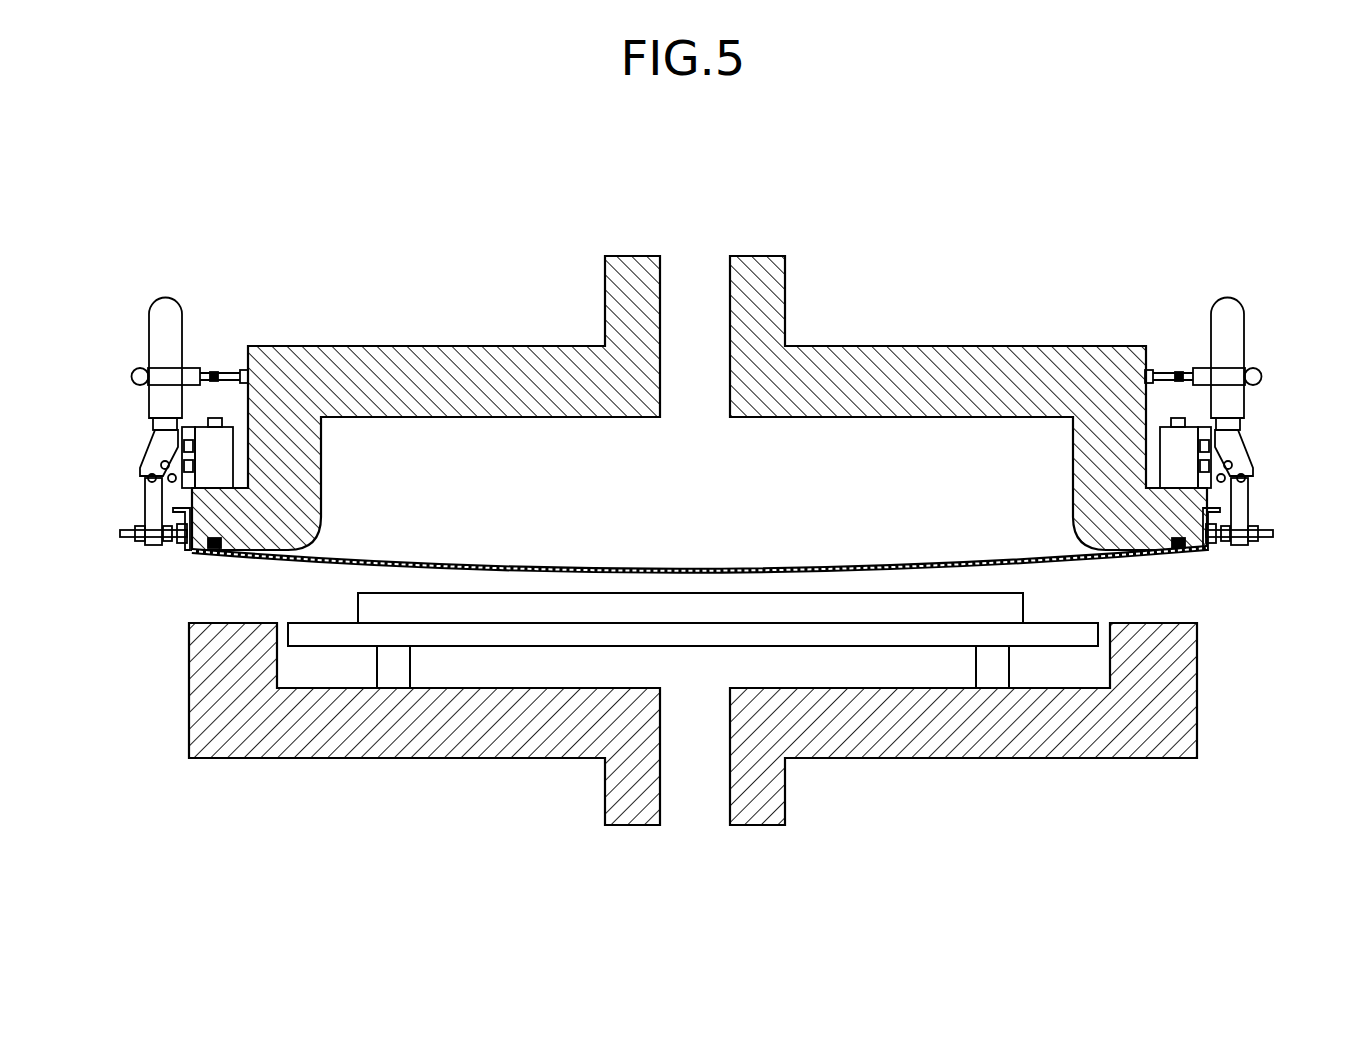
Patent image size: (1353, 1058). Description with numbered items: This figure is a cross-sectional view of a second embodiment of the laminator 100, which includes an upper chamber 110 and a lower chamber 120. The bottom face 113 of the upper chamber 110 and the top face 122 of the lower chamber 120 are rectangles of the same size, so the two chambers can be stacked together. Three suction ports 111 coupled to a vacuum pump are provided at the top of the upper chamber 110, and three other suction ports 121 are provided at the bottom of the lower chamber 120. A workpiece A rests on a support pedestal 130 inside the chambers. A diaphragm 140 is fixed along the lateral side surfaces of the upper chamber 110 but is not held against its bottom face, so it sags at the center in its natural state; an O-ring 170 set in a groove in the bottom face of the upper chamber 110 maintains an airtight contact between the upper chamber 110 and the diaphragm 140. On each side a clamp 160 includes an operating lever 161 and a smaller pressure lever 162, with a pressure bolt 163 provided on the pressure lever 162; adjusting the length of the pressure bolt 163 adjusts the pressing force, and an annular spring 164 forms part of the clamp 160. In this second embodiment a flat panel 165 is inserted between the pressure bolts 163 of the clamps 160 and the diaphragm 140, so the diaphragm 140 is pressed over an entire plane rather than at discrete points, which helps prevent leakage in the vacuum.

The laminator 100 is at (497, 216).
The upper chamber 110 is at (937, 353).
The suction ports 111 is at (690, 270).
The bottom face 113 is at (285, 565).
The lower chamber 120 is at (385, 740).
The suction ports 121 is at (695, 805).
The top face 122 is at (257, 623).
The support pedestal 130 is at (847, 633).
The diaphragm 140 is at (595, 568).
The clamp 160 is at (228, 256).
The operating lever 161 is at (165, 298).
The pressure lever 162 is at (145, 498).
The pressure bolt 163 is at (177, 543).
The annular spring 164 is at (133, 375).
The flat panel 165 is at (187, 552).
The O-ring 170 is at (215, 552).
The workpiece A is at (777, 600).